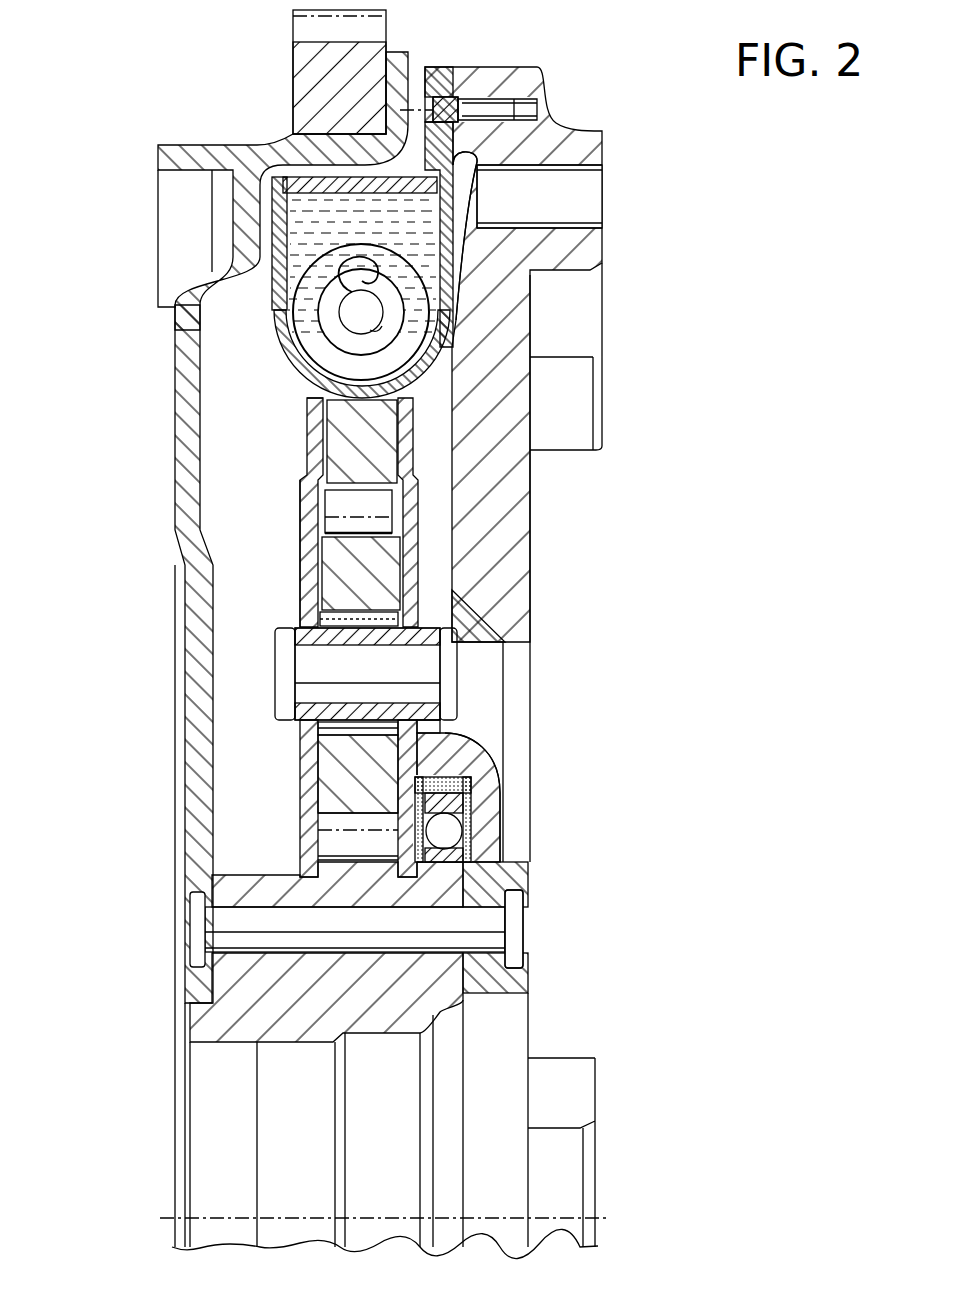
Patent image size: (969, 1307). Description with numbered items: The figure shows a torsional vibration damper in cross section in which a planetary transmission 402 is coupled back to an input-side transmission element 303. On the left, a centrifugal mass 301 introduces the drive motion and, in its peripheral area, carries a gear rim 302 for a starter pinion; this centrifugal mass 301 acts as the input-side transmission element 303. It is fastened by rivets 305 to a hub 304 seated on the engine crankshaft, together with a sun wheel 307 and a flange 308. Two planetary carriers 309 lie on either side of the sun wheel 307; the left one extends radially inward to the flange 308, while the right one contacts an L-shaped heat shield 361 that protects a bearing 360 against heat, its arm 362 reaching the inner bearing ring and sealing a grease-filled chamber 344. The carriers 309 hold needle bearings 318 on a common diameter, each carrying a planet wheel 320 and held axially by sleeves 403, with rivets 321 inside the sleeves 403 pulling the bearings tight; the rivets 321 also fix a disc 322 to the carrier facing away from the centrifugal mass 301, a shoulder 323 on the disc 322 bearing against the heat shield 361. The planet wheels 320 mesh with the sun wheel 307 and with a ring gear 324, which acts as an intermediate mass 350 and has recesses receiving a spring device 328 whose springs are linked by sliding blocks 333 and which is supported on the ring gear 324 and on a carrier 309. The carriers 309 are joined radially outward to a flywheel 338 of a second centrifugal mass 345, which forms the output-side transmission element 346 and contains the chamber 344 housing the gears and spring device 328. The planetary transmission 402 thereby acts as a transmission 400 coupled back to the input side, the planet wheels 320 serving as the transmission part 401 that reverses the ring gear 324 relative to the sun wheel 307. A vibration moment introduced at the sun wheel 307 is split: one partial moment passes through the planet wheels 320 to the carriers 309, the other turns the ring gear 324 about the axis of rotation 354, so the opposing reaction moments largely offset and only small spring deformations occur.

The centrifugal mass 301 is at (190, 405).
The gear rim 302 is at (313, 70).
The input-side transmission element 303 is at (176, 341).
The hub 304 is at (223, 1010).
The rivets 305 is at (523, 955).
The sun wheel 307 is at (315, 866).
The flange 308 is at (522, 893).
The planetary carriers 309 is at (310, 483).
The needle bearings 318 is at (505, 625).
The planet wheel 320 is at (335, 753).
The rivets 321 is at (446, 685).
The disc 322 is at (437, 757).
The shoulder 323 is at (500, 788).
The ring gear 324 is at (412, 397).
The spring device 328 is at (404, 340).
The sliding blocks 333 is at (294, 233).
The flywheel 338 is at (513, 537).
The chamber 344 is at (430, 378).
The second centrifugal mass 345 is at (523, 568).
The output-side transmission element 346 is at (500, 408).
The intermediate mass 350 is at (342, 434).
The axis of rotation 354 is at (165, 1218).
The bearing 360 is at (446, 842).
The heat shield 361 is at (480, 771).
The arm 362 is at (466, 820).
The transmission 400 is at (324, 408).
The transmission part 401 is at (332, 557).
The planetary transmission 402 is at (288, 597).
The sleeves 403 is at (280, 662).